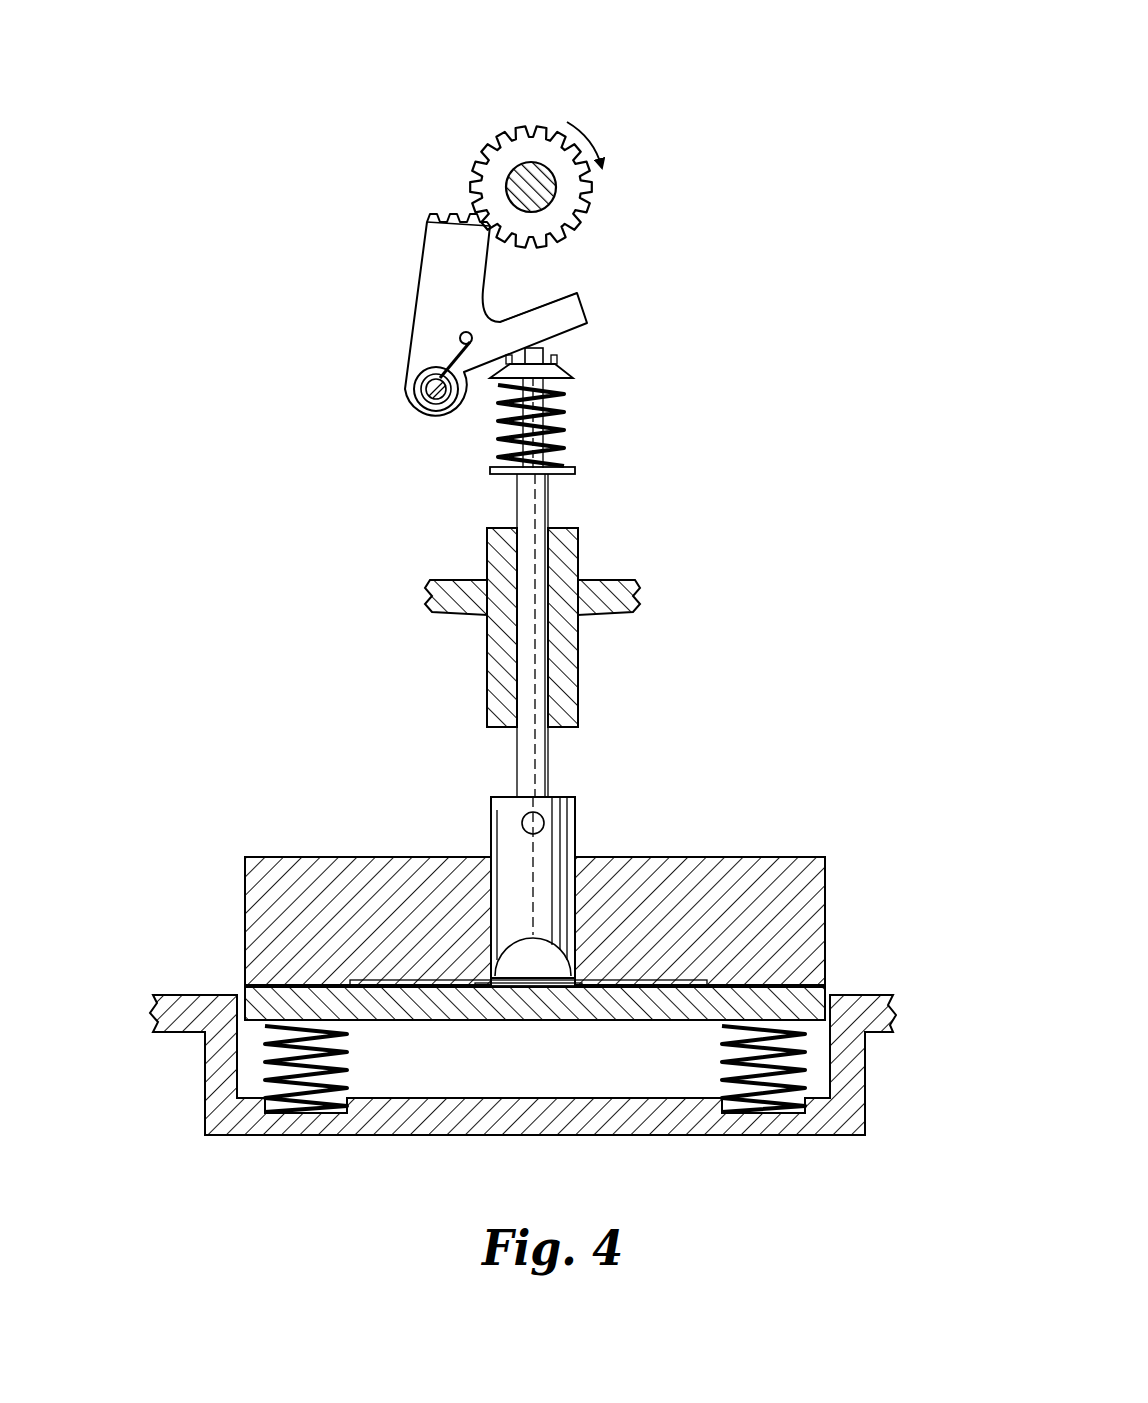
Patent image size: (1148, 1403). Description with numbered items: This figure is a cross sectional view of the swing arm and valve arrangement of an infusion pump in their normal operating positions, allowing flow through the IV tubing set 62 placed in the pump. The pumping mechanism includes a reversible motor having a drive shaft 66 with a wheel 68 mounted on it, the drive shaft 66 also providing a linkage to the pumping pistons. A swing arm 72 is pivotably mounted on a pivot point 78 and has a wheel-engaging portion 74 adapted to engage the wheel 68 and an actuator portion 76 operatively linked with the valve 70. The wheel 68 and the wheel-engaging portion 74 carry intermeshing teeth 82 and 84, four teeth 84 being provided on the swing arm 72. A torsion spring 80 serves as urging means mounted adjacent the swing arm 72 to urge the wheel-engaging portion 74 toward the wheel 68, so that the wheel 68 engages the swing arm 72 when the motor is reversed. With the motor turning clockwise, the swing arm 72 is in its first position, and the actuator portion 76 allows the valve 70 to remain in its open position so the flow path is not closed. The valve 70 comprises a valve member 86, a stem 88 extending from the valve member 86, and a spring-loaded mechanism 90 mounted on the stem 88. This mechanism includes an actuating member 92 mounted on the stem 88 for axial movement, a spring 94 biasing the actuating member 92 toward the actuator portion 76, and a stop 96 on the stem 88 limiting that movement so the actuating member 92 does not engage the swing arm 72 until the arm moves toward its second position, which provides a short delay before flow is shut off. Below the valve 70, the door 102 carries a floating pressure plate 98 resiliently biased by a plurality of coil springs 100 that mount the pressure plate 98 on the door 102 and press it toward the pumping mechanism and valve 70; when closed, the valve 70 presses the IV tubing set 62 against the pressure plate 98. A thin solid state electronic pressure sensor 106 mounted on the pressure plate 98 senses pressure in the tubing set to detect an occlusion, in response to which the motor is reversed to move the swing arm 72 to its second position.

The IV tubing set 62 is at (622, 985).
The drive shaft 66 is at (537, 177).
The wheel 68 is at (490, 145).
The valve 70 is at (537, 872).
The swing arm 72 is at (473, 282).
The wheel-engaging portion 74 is at (437, 237).
The actuator portion 76 is at (572, 307).
The pivot point 78 is at (428, 388).
The torsion spring 80 is at (450, 343).
The teeth 82 is at (588, 197).
The teeth 84 is at (450, 213).
The valve member 86 is at (492, 813).
The stem 88 is at (550, 498).
The spring-loaded mechanism 90 is at (512, 564).
The actuating member 92 is at (573, 377).
The spring 94 is at (562, 432).
The stop 96 is at (553, 358).
The floating pressure plate 98 is at (420, 1008).
The coil springs 100 is at (350, 1070).
The door 102 is at (205, 1100).
The pressure sensor 106 is at (523, 1020).